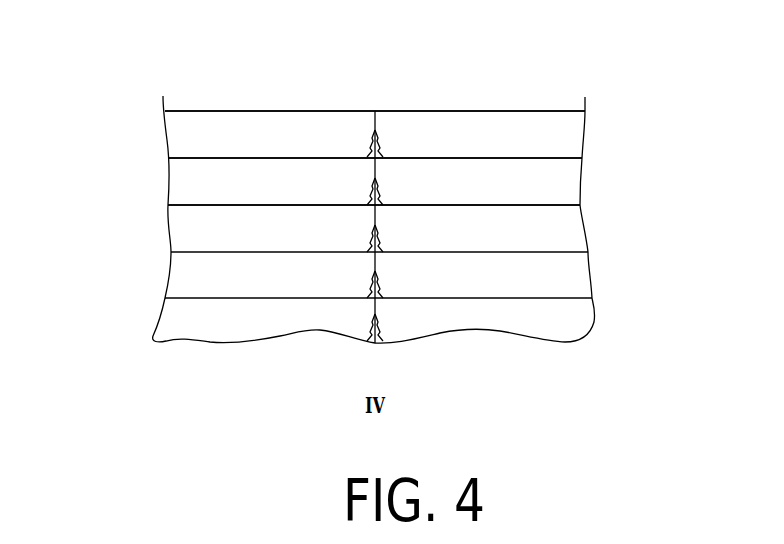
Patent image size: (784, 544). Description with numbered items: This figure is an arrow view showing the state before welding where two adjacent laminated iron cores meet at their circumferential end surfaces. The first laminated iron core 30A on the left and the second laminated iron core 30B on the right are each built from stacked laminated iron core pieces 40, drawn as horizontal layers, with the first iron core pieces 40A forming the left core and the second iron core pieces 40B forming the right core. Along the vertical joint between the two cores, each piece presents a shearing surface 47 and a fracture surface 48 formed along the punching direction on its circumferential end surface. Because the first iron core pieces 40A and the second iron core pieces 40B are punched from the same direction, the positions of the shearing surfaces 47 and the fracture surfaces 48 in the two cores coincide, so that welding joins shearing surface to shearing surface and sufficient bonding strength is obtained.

The first laminated iron core 30A is at (256, 108).
The second laminated iron core 30B is at (503, 108).
The laminated iron core piece 40 is at (374, 219).
The first iron core piece 40A is at (181, 182).
The second iron core piece 40B is at (568, 134).
The shearing surface 47 is at (371, 65).
The fracture surface 48 is at (382, 157).